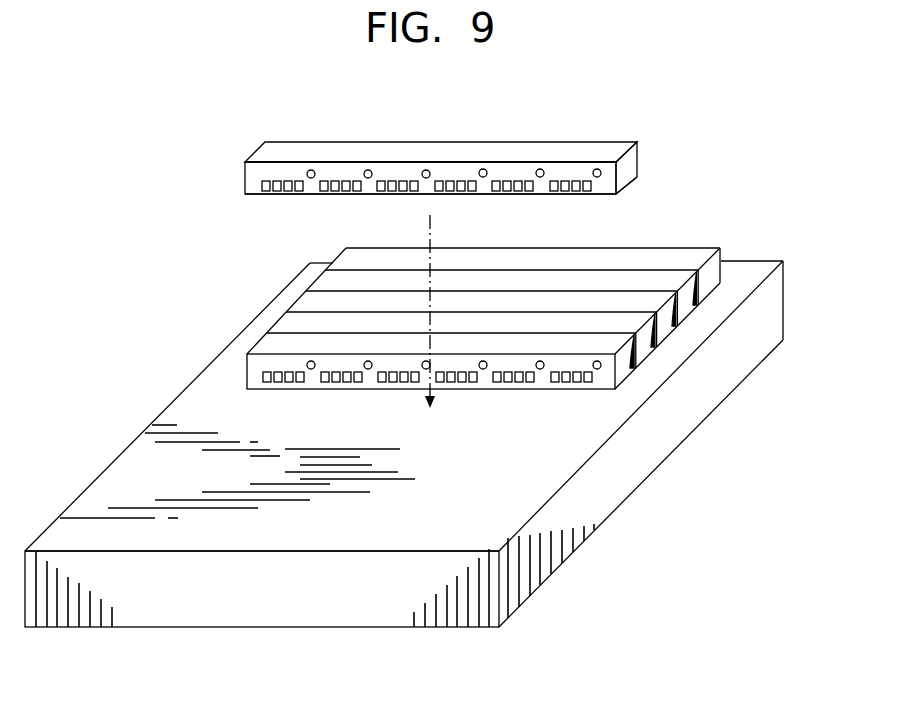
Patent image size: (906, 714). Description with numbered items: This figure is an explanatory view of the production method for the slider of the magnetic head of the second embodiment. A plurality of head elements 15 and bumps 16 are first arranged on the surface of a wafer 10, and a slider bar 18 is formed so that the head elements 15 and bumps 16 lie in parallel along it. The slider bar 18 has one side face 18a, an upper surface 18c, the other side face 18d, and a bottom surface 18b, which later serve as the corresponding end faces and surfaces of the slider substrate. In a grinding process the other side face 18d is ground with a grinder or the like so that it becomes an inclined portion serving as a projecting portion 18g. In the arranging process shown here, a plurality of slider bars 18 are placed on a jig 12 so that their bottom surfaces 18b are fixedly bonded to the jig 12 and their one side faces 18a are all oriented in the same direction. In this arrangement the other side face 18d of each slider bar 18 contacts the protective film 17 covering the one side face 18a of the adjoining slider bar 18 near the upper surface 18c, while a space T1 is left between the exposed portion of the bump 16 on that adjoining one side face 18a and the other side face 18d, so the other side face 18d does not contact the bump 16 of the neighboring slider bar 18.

The wafer 10 is at (451, 415).
The jig 12 is at (755, 277).
The head element 15 is at (369, 170).
The bump 16 is at (357, 181).
The protective film 17 is at (605, 168).
The slider bar 18 is at (451, 248).
The one side face 18a is at (548, 170).
The bottom surface 18b is at (626, 184).
The upper surface 18c is at (483, 155).
The other side face 18d is at (640, 158).
The projecting portion 18g is at (638, 140).
The space T1 is at (698, 295).